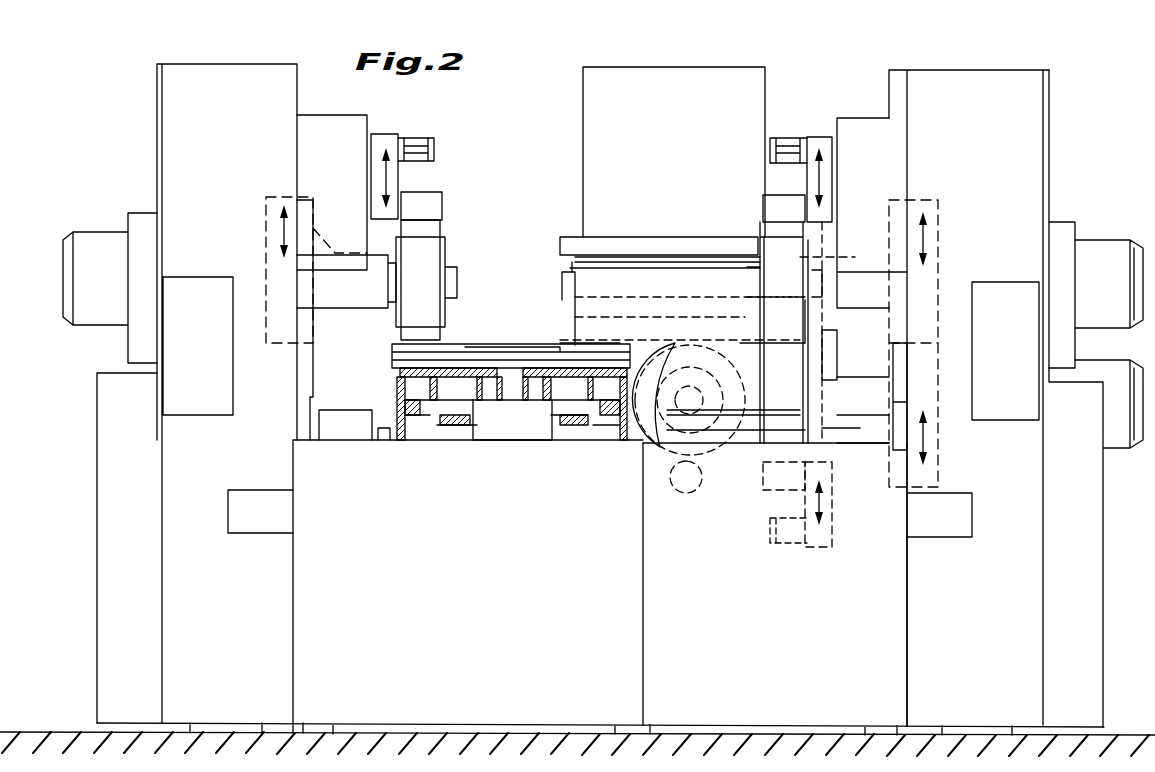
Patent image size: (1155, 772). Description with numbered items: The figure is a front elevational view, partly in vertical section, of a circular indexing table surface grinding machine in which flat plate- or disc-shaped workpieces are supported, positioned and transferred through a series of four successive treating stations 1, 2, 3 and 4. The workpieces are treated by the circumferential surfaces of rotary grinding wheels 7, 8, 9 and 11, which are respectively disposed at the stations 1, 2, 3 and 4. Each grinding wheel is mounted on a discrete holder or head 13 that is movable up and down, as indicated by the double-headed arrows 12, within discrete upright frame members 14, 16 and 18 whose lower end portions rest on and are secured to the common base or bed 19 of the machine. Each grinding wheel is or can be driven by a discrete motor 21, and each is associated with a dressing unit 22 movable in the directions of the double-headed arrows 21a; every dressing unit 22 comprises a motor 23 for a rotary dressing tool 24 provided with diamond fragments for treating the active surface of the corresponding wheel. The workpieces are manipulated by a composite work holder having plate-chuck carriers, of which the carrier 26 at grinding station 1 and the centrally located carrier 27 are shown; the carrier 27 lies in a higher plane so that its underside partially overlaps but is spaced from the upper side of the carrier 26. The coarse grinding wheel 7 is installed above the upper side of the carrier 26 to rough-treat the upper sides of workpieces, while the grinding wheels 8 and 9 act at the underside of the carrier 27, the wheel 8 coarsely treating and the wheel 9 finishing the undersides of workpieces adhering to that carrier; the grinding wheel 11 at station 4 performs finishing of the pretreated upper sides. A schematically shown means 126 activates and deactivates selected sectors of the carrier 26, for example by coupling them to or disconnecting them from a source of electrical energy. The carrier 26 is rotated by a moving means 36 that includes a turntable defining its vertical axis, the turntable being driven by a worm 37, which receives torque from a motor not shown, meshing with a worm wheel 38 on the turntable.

The treating station 1 is at (475, 260).
The treating station 2 is at (675, 332).
The treating station 3 is at (828, 354).
The treating station 4 is at (810, 318).
The grinding wheel 7 is at (432, 238).
The grinding wheel 8 is at (655, 345).
The grinding wheel 9 is at (760, 453).
The grinding wheel 11 is at (803, 236).
The double-headed arrows 12 is at (282, 235).
The holder or head 13 is at (328, 298).
The upright frame member 14 is at (282, 578).
The upright frame member 16 is at (748, 90).
The upright frame member 18 is at (1015, 95).
The base or bed 19 is at (427, 668).
The motor 21 is at (102, 245).
The double-headed arrows 21a is at (396, 180).
The dressing unit 22 is at (385, 150).
The motor 23 is at (422, 139).
The rotary dressing tool 24 is at (430, 200).
The carrier (plate chuck) 26 is at (395, 358).
The carrier (plate chuck) 27 is at (570, 323).
The moving means 36 is at (498, 418).
The worm 37 is at (612, 412).
The worm wheel 38 is at (602, 407).
The activating and deactivating means 126 is at (328, 441).